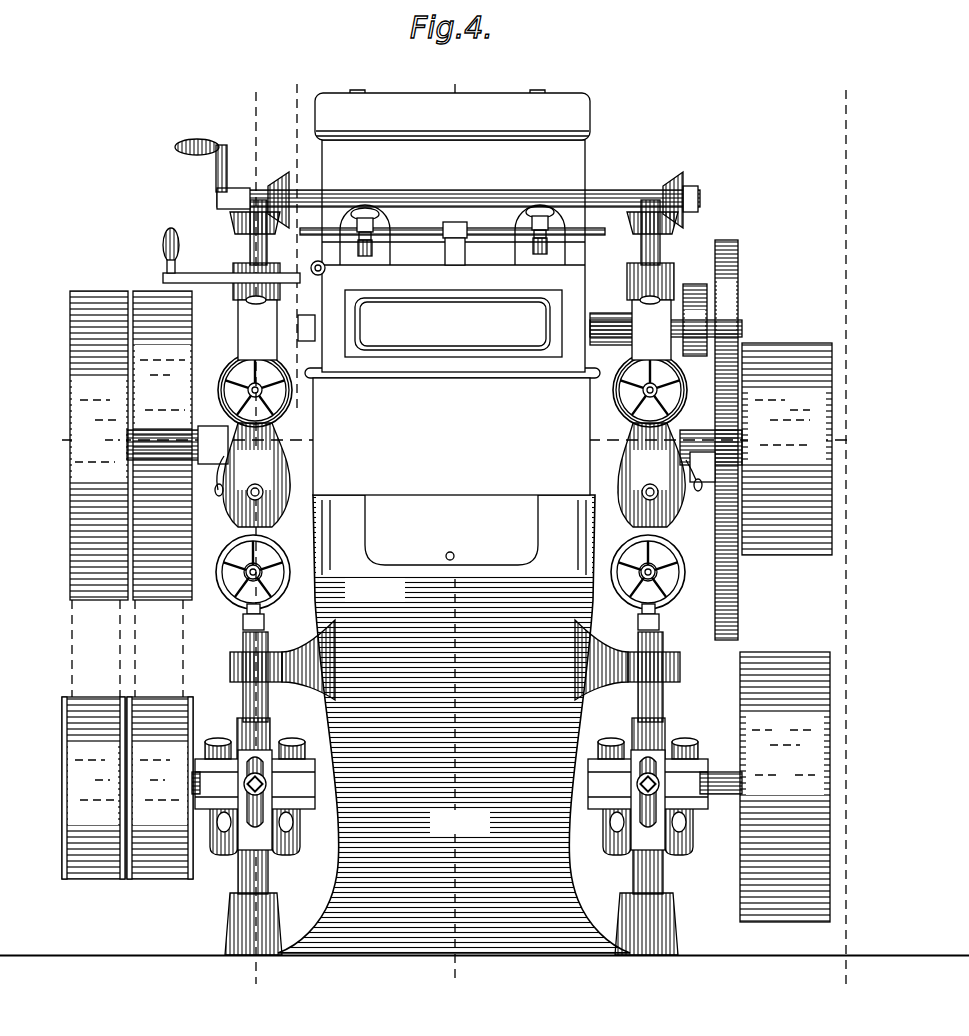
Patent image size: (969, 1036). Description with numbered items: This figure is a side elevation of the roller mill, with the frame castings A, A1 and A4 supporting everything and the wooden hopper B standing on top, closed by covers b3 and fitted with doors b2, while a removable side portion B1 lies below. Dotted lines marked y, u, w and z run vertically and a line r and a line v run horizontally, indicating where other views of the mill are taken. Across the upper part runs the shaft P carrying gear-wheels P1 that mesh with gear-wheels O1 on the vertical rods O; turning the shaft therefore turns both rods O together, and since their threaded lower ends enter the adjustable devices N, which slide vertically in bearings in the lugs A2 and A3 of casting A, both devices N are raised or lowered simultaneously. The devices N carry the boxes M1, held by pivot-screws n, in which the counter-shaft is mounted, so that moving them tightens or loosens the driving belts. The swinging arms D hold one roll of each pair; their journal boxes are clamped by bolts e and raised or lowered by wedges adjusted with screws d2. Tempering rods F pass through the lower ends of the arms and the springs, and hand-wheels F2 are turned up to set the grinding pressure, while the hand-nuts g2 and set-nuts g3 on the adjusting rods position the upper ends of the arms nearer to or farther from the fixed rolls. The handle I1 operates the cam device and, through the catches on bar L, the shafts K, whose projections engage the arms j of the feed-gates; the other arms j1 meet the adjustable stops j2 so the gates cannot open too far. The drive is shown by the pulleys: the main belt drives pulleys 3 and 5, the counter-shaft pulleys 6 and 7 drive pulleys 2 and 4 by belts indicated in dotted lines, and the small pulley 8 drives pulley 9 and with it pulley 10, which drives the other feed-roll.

The casting A is at (454, 724).
The casting A1 is at (453, 311).
The lug A2 is at (230, 917).
The lug A3 is at (267, 684).
The casting A4 is at (268, 250).
The hopper B is at (453, 256).
The side portion B1 is at (452, 431).
The door b2 is at (453, 323).
The cover b3 is at (452, 115).
The swinging arm D is at (454, 475).
The screw d2 is at (220, 455).
The bolt e is at (254, 500).
The tempering rod F is at (240, 583).
The hand-wheel F2 is at (220, 575).
The hand-nut g2 is at (226, 371).
The hand set-nut g3 is at (222, 383).
The crank or handle I1 is at (206, 276).
The arm j is at (458, 246).
The arm j1 is at (374, 260).
The stop j2 is at (375, 214).
The shaft K is at (476, 232).
The bar L is at (325, 268).
The box M1 is at (451, 796).
The adjustable device N is at (270, 727).
The pivot-screw n is at (264, 784).
The rod O is at (242, 618).
The gear-wheel O1 is at (232, 222).
The shaft P is at (616, 199).
The gear-wheel P1 is at (278, 178).
The pulley 2 is at (162, 445).
The pulley 3 is at (787, 449).
The pulley 4 is at (99, 445).
The pulley 5 is at (785, 787).
The pulley 6 is at (160, 788).
The pulley 7 is at (93, 788).
The pulley 8 is at (705, 482).
The pulley 9 is at (726, 440).
The pulley 10 is at (695, 320).
The dotted line r is at (250, 442).
The dotted line u is at (297, 241).
The dotted line v is at (660, 442).
The dotted line w is at (453, 530).
The dotted line y is at (252, 534).
The dotted line z is at (843, 533).